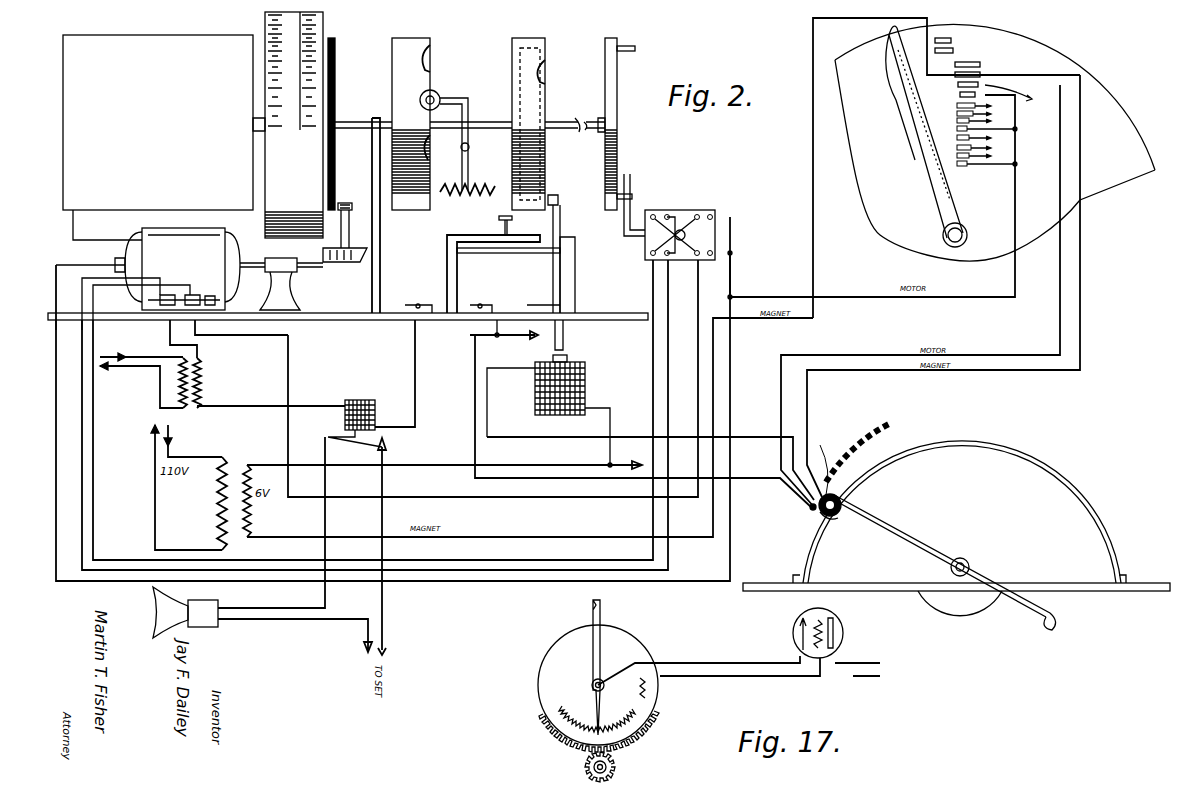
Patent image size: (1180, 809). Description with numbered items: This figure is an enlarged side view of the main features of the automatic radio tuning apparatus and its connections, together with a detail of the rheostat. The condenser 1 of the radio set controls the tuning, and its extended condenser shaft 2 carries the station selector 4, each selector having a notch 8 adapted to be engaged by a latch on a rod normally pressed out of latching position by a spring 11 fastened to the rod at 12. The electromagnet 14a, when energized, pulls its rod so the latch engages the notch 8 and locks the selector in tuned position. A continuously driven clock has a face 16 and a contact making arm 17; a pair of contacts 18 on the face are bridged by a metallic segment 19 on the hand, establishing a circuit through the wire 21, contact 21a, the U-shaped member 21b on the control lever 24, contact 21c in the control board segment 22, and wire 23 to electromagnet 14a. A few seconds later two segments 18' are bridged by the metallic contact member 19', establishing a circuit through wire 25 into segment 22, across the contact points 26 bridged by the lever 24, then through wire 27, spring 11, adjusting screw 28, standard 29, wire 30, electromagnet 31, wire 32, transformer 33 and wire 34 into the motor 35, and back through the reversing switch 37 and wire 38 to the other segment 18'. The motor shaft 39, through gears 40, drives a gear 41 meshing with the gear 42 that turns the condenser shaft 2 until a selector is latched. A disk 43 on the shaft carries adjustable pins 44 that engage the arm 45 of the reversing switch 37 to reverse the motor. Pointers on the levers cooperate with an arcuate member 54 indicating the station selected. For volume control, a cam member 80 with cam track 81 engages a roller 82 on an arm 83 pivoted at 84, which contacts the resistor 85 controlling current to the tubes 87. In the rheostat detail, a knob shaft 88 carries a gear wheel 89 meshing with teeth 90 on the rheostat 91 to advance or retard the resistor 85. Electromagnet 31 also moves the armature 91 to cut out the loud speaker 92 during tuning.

In FIG. 2, the condenser 1 is at (164, 137).
In FIG. 2, the condenser shaft 2 is at (347, 122).
In FIG. 2, the station selector 4 is at (536, 40).
In FIG. 2, the notch 8 is at (548, 74).
In FIG. 2, the spring 11 is at (527, 254).
In FIG. 2, the fastening point of spring to rod 12 is at (950, 27).
In FIG. 2, the electromagnet 14a is at (586, 384).
In FIG. 2, the clock face 16 is at (1115, 112).
In FIG. 2, the contact making arm 17 is at (945, 206).
In FIG. 2, the pair of contacts 18 is at (1007, 73).
In FIG. 2, the segments 18' is at (972, 126).
In FIG. 2, the metallic segment 19 is at (885, 97).
In FIG. 2, the metallic contact member 19' is at (905, 125).
In FIG. 2, the wire 21 is at (1082, 252).
In FIG. 2, the contact 21a is at (826, 460).
In FIG. 2, the U-shaped member 21b is at (842, 500).
In FIG. 2, the contact 21c is at (838, 518).
In FIG. 2, the control board segment 22 is at (1042, 422).
In FIG. 2, the wire 23 is at (770, 437).
In FIG. 2, the control lever 24 is at (933, 540).
In FIG. 2, the wire 25 is at (1060, 186).
In FIG. 2, the contact points 26 is at (805, 512).
In FIG. 2, the wire 27 is at (474, 407).
In FIG. 2, the adjusting screw 28 is at (514, 226).
In FIG. 2, the standard 29 is at (447, 268).
In FIG. 2, the wire 30 is at (417, 353).
In FIG. 2, the electromagnet 31 is at (360, 400).
In FIG. 2, the wire 32 is at (256, 403).
In FIG. 2, the transformer 33 is at (202, 362).
In FIG. 2, the wire 34 is at (90, 372).
In FIG. 2, the motor 35 is at (130, 246).
In FIG. 2, the reversing switch 37 is at (690, 210).
In FIG. 2, the wire 38 is at (843, 293).
In FIG. 2, the motor shaft 39 is at (300, 274).
In FIG. 2, the gears 40 is at (344, 264).
In FIG. 2, the gear 41 is at (346, 203).
In FIG. 2, the gear 42 is at (331, 78).
In FIG. 2, the disk 43 is at (619, 62).
In FIG. 2, the adjustable pins 44 is at (631, 46).
In FIG. 2, the arm of reversing switch 45 is at (631, 176).
In FIG. 2, the arcuate member 54 is at (975, 612).
In FIG. 2, the cam member 80 is at (410, 40).
In FIG. 2, the cam track 81 is at (433, 52).
In FIG. 2, the roller 82 is at (440, 95).
In FIG. 2, the arm 83 is at (470, 118).
In FIG. 17, the arm 83 is at (602, 616).
In FIG. 2, the pivot 84 is at (470, 147).
In FIG. 17, the pivot 84 is at (590, 684).
In FIG. 2, the resistor 85 is at (478, 186).
In FIG. 17, the resistor 85 is at (648, 698).
In FIG. 17, the tubes 87 is at (845, 636).
In FIG. 17, the shaft 88 is at (616, 767).
In FIG. 17, the gear wheel 89 is at (586, 767).
In FIG. 17, the teeth 90 is at (538, 720).
In FIG. 2, the rheostat 91 is at (388, 443).
In FIG. 2, the loud speaker 92 is at (204, 627).